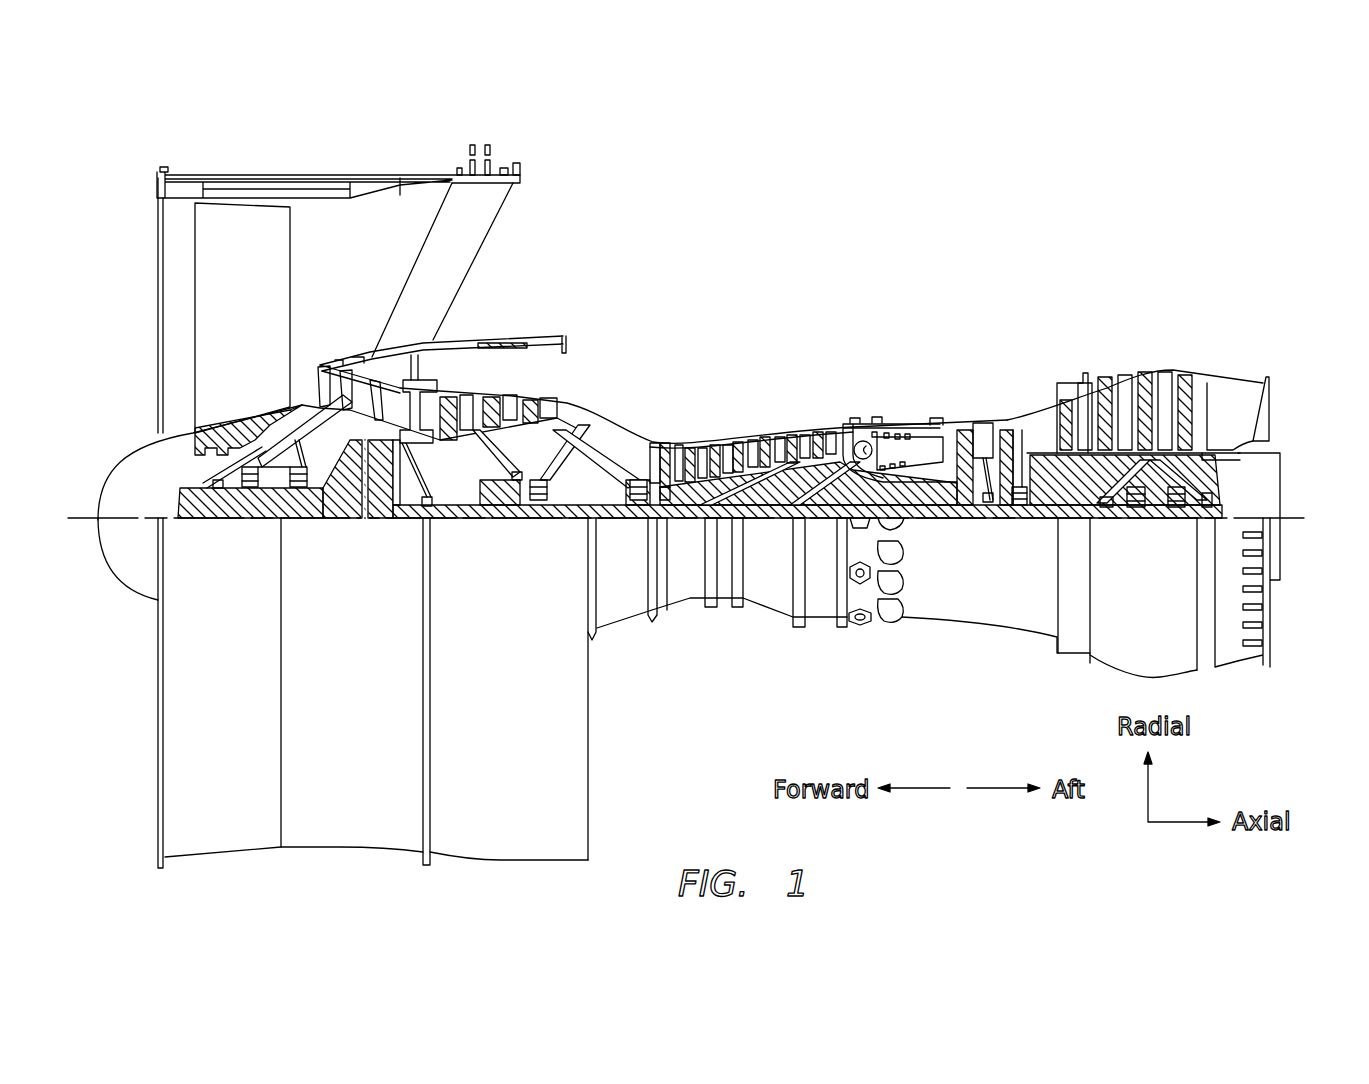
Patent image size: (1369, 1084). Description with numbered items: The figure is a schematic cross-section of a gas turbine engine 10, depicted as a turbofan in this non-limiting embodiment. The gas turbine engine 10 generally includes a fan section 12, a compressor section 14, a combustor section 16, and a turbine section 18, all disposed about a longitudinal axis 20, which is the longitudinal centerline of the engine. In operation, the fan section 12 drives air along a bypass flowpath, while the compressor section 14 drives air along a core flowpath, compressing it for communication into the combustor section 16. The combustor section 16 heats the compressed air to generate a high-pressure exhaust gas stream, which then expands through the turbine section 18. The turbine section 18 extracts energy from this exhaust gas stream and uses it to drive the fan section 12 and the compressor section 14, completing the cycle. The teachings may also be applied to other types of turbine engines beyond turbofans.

The gas turbine engine 10 is at (1019, 237).
The fan section 12 is at (423, 155).
The compressor section 14 is at (433, 300).
The combustor section 16 is at (967, 300).
The turbine section 18 is at (1205, 300).
The longitudinal axis 20 is at (1303, 518).